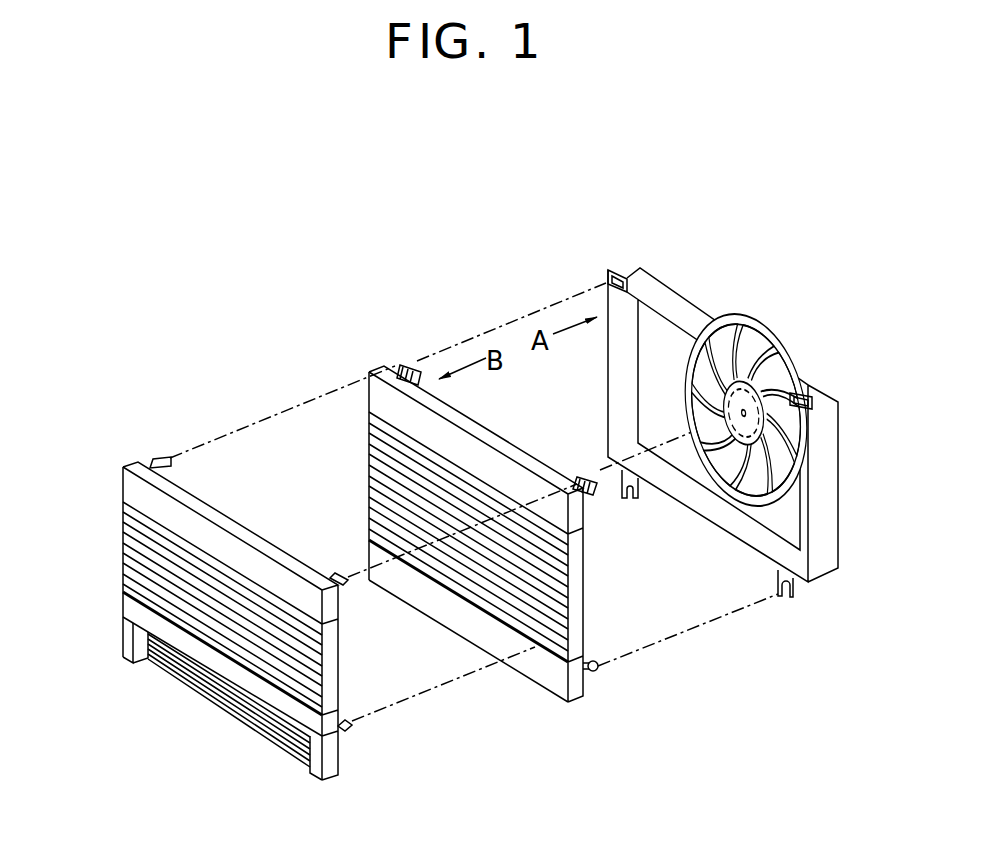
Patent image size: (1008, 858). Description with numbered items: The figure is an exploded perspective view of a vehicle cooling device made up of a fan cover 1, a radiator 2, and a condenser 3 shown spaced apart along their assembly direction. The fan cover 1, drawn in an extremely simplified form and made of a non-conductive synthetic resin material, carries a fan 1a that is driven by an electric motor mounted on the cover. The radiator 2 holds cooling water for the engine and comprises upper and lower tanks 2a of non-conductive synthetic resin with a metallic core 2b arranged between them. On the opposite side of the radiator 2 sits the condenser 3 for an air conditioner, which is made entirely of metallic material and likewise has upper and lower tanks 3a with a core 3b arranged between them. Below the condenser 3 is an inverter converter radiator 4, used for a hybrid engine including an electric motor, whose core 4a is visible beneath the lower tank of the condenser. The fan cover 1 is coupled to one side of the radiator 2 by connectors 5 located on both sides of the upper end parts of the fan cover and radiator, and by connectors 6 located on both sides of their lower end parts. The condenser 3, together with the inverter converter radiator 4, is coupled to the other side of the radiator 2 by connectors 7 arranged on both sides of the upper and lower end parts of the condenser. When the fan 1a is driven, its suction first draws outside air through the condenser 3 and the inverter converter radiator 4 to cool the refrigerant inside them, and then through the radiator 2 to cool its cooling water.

The fan cover 1 is at (723, 370).
The fan 1a is at (752, 360).
The radiator 2 is at (504, 502).
The upper and lower tanks 2a is at (462, 447).
The core 2b is at (530, 584).
The condenser 3 is at (246, 586).
The upper and lower tanks 3a is at (198, 533).
The core 3b is at (146, 549).
The inverter converter radiator 4 is at (268, 724).
The core 4a is at (237, 698).
The connectors 5 is at (403, 350).
The connectors 6 is at (603, 680).
The connectors 7 is at (157, 460).